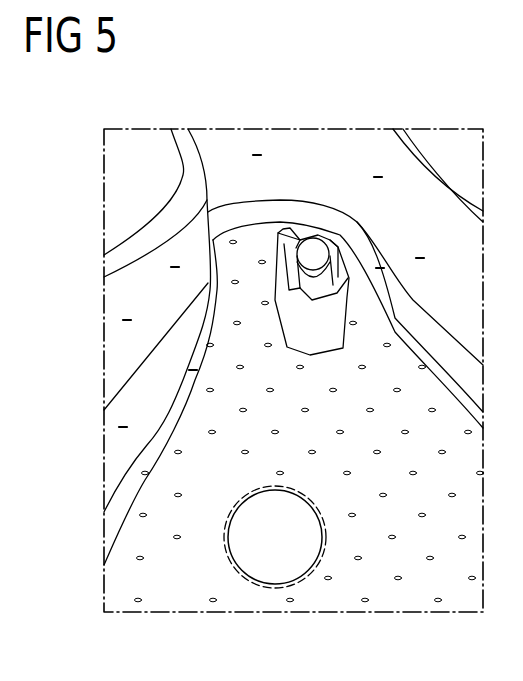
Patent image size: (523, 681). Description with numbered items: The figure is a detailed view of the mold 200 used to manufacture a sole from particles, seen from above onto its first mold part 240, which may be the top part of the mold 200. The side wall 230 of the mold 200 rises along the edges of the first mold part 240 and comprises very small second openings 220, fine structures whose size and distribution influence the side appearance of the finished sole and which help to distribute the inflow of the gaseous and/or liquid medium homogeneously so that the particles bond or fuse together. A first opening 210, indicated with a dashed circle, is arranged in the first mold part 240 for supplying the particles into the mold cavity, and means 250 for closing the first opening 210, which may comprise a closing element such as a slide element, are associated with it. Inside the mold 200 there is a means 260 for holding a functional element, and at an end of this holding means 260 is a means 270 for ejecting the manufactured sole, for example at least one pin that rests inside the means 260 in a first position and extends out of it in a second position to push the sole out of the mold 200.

The mold 200 is at (143, 198).
The first opening 210 is at (322, 537).
The second openings 220 is at (278, 432).
The side wall 230 is at (363, 153).
The first mold part 240 is at (383, 582).
The means for closing 250 is at (275, 572).
The means for holding 260 is at (313, 255).
The means for ejecting 270 is at (327, 288).